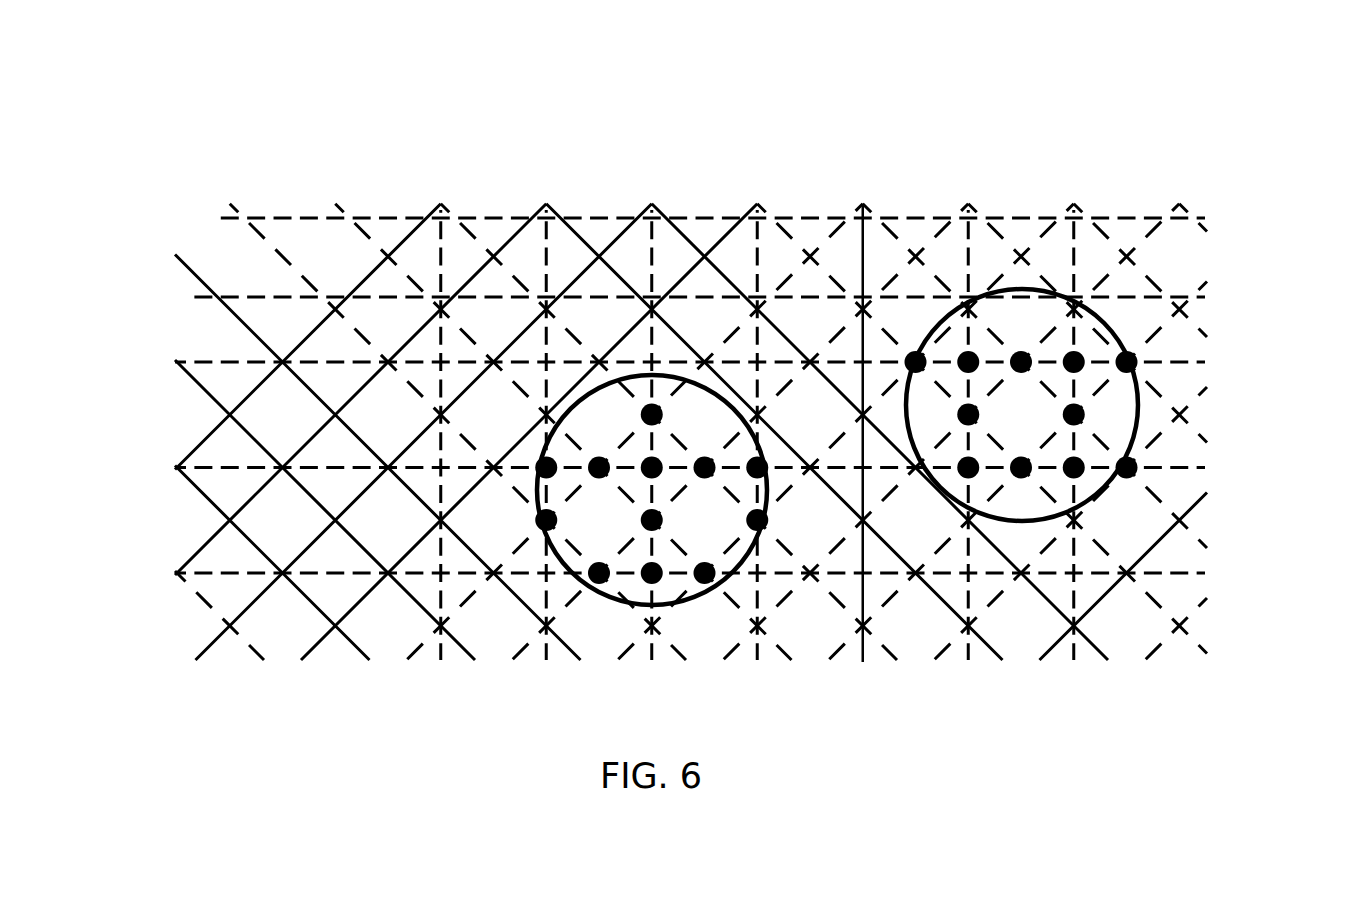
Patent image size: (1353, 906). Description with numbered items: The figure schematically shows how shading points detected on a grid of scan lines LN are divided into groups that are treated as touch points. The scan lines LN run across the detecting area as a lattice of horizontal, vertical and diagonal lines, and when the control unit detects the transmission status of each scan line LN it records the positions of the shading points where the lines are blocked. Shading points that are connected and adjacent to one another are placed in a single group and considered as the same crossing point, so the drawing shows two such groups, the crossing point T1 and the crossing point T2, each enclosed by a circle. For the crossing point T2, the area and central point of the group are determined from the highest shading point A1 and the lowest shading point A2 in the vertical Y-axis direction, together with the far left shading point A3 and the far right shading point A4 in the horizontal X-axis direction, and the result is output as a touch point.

The scan lines LN is at (298, 208).
The crossing point T1 is at (658, 376).
The crossing point T2 is at (1023, 289).
The highest shading point A1 is at (1022, 360).
The lowest shading point A2 is at (1023, 470).
The far left shading point A3 is at (914, 360).
The far right shading point A4 is at (1128, 361).